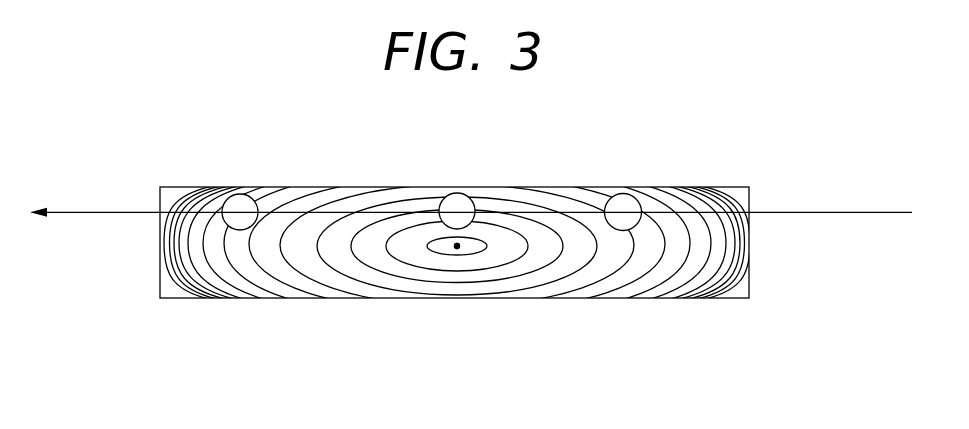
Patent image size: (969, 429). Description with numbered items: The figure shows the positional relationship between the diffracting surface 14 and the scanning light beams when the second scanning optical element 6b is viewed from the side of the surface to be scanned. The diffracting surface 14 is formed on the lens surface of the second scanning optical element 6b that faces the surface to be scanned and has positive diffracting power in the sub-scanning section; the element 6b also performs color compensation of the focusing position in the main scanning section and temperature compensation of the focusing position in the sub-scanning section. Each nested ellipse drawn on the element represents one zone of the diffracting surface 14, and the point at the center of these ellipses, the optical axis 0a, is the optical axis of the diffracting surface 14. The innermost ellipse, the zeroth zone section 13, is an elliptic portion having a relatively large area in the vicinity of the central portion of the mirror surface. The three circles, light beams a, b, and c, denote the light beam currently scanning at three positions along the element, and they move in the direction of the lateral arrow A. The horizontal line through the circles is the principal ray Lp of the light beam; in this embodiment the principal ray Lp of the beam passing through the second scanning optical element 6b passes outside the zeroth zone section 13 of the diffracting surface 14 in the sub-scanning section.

The diffracting surface 14 is at (609, 296).
The second scanning optical element 6b is at (717, 187).
The principal ray Lp is at (792, 212).
The lateral arrow A is at (48, 232).
The light beam a is at (240, 191).
The light beam b is at (457, 192).
The light beam c is at (624, 192).
The optical axis 0a is at (457, 248).
The zeroth zone section 13 is at (462, 256).